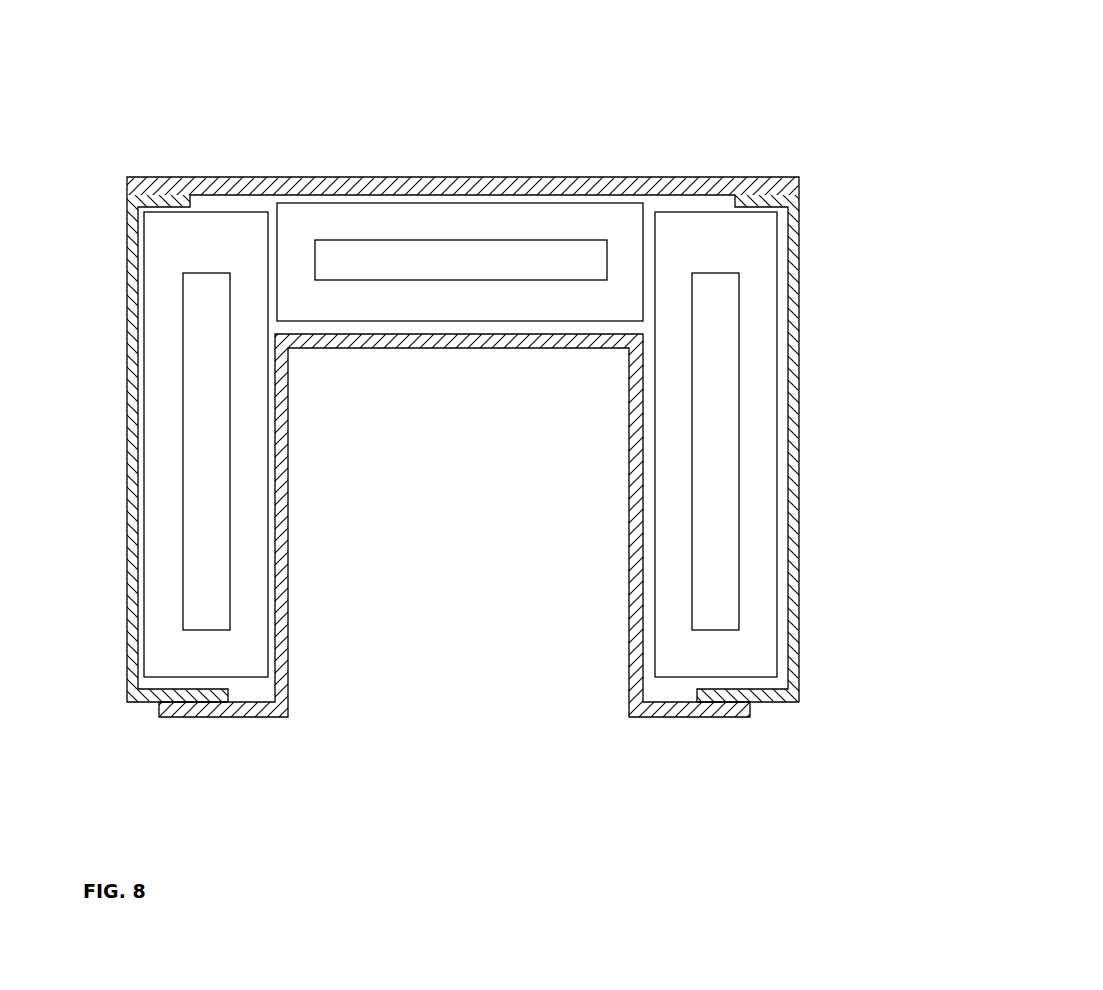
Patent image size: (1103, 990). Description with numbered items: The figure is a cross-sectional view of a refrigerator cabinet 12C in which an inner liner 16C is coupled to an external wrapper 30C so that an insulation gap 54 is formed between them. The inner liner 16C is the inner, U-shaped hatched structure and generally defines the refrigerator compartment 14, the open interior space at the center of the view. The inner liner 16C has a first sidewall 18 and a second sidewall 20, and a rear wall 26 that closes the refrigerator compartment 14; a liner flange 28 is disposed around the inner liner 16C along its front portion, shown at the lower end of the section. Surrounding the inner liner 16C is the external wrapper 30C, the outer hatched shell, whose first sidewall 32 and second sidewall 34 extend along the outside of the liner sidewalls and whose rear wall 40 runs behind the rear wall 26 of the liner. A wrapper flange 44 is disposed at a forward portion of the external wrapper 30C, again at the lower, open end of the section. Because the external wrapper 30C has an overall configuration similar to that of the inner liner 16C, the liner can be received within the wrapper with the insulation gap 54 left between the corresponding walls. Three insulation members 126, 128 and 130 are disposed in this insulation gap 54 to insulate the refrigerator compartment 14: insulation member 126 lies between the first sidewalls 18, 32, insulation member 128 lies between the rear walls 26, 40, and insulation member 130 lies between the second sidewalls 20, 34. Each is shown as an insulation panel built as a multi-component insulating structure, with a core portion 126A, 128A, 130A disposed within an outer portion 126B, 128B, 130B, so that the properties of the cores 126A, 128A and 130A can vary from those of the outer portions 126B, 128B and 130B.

The refrigerator cabinet 12C is at (670, 108).
The refrigerator compartment 14 is at (460, 556).
The inner liner 16C is at (454, 554).
The first sidewall 18 is at (290, 457).
The second sidewall 20 is at (629, 558).
The rear wall 26 is at (468, 341).
The liner flange 28 is at (210, 715).
The external wrapper 30C is at (449, 384).
The first sidewall 32 is at (127, 562).
The second sidewall 34 is at (793, 542).
The rear wall 40 is at (300, 177).
The wrapper flange 44 is at (177, 715).
The insulation gap 54 is at (260, 350).
The insulation member 126 is at (157, 444).
The core portion 126A is at (207, 363).
The outer portion 126B is at (167, 463).
The insulation member 128 is at (460, 178).
The core portion 128A is at (380, 255).
The outer portion 128B is at (530, 228).
The insulation member 130 is at (776, 444).
The core portion 130A is at (723, 342).
The outer portion 130B is at (753, 410).